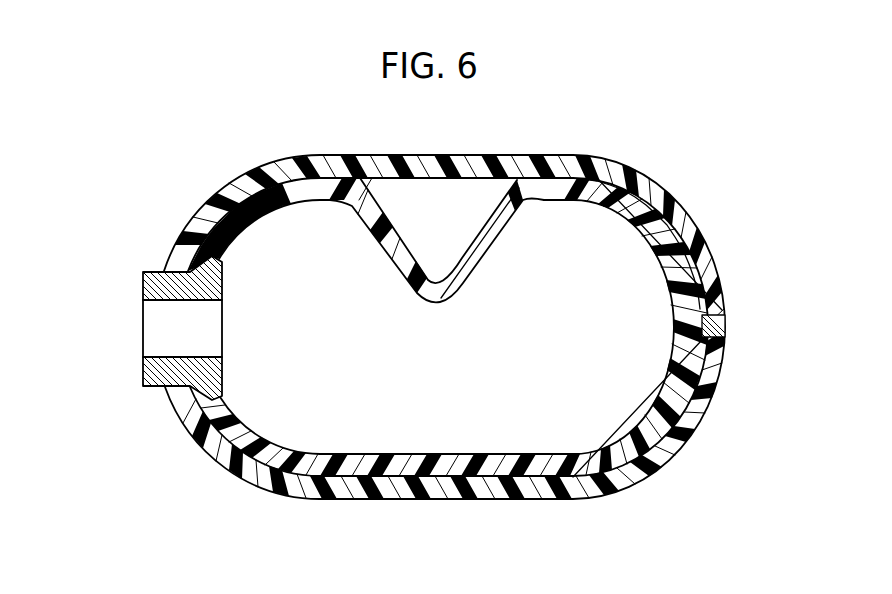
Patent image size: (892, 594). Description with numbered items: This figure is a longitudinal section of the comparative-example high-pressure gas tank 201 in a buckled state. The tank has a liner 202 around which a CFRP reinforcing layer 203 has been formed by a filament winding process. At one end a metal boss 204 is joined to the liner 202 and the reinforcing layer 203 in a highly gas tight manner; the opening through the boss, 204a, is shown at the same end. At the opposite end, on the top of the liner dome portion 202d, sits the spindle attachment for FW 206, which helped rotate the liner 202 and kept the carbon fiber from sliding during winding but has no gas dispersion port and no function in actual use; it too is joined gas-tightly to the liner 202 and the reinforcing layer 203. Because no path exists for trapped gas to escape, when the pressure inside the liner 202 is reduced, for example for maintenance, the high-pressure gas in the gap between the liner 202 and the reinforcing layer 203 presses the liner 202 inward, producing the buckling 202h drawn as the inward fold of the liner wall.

The high-pressure gas tank 201 is at (542, 142).
The liner 202 is at (667, 240).
The buckling 202h is at (473, 265).
The liner dome portion 202d is at (673, 322).
The CFRP reinforcing layer 203 is at (632, 182).
The metal boss 204 is at (138, 287).
The opening of mouthpiece 204a is at (150, 342).
The spindle attachment for FW 206 is at (729, 331).